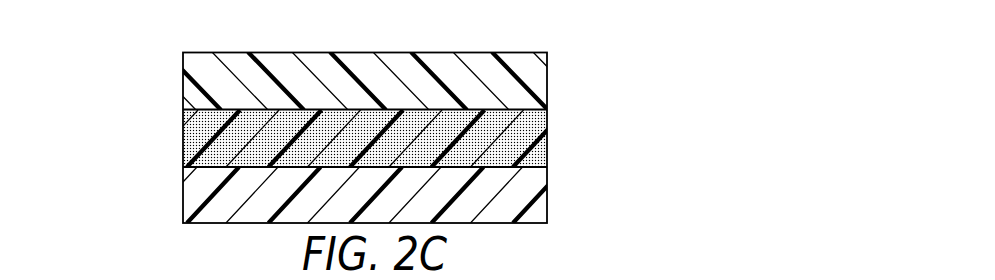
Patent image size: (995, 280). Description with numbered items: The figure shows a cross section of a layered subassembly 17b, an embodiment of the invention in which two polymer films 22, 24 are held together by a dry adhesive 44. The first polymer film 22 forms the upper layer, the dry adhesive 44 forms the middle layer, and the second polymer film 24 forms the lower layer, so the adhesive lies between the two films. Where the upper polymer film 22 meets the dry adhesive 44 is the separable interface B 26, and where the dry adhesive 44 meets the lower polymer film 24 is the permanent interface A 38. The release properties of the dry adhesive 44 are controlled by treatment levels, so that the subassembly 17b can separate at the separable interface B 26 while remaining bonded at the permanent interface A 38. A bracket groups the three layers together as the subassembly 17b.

The subassembly 17b is at (158, 53).
The polymer film 22 is at (547, 82).
The separable interface B 26 is at (547, 108).
The dry adhesive 44 is at (547, 132).
The permanent interface A 38 is at (547, 162).
The polymer film 24 is at (547, 187).